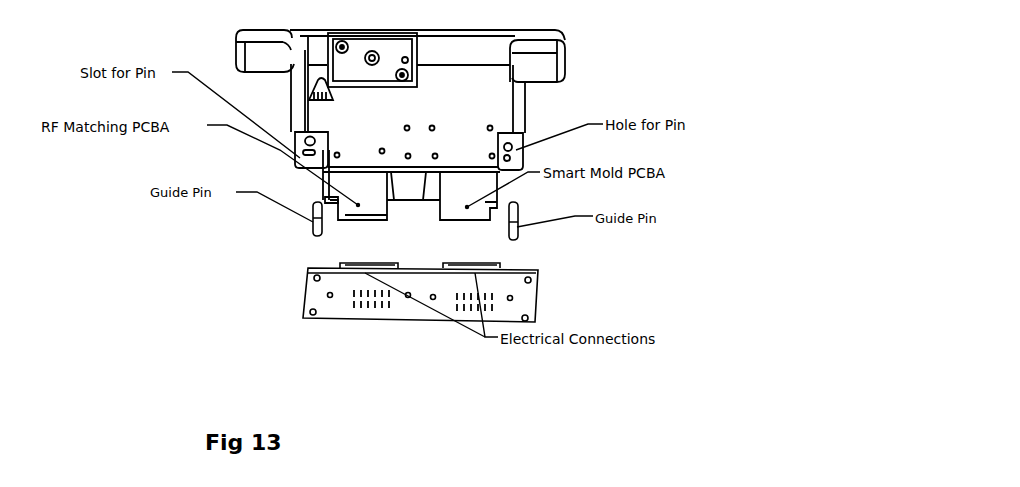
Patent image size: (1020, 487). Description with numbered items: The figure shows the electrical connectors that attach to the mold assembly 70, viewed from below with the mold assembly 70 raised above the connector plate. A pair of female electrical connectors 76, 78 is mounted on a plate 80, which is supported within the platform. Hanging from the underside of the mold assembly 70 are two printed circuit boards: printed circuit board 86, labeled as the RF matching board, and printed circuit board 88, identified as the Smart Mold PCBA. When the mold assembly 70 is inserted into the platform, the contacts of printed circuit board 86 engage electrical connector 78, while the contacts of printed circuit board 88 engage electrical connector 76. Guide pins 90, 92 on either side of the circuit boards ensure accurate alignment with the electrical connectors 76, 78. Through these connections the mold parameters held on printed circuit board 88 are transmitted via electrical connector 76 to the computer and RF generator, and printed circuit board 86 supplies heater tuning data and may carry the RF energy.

The mold assembly 70 is at (454, 116).
The electrical connector 76 is at (503, 268).
The electrical connector 78 is at (340, 264).
The plate 80 is at (318, 295).
The printed circuit board 86 is at (313, 239).
The printed circuit board 88 is at (468, 224).
The guide pin 90 is at (312, 206).
The guide pin 92 is at (518, 208).